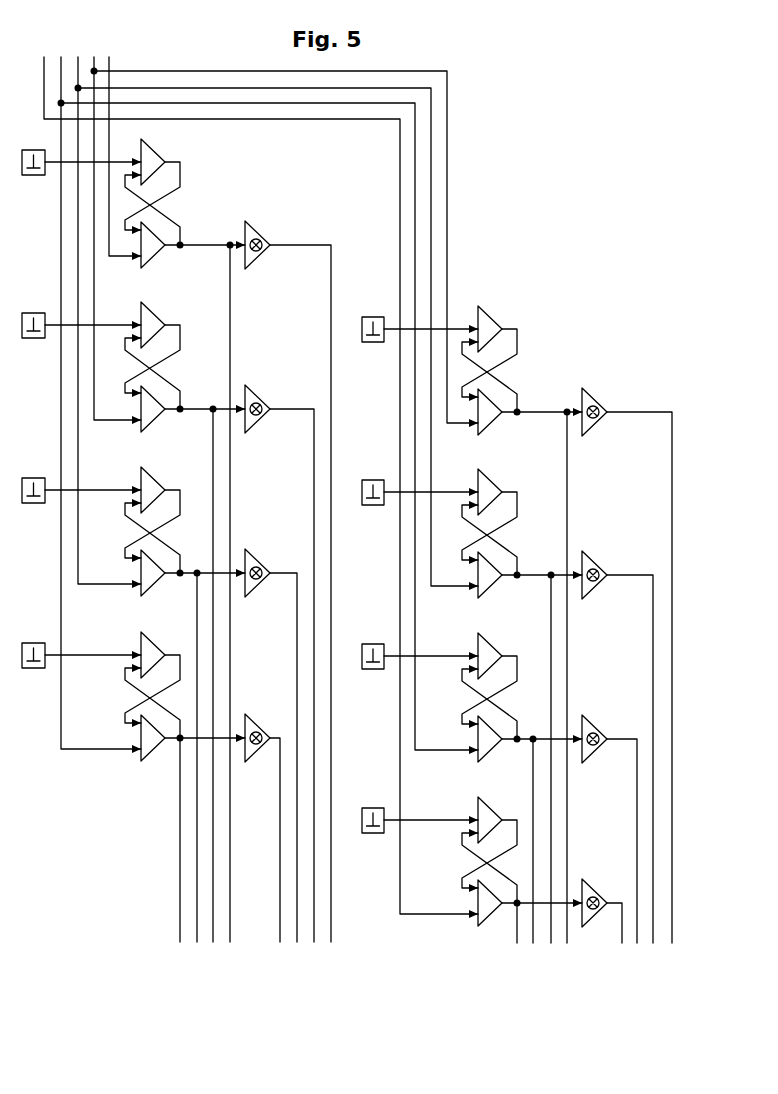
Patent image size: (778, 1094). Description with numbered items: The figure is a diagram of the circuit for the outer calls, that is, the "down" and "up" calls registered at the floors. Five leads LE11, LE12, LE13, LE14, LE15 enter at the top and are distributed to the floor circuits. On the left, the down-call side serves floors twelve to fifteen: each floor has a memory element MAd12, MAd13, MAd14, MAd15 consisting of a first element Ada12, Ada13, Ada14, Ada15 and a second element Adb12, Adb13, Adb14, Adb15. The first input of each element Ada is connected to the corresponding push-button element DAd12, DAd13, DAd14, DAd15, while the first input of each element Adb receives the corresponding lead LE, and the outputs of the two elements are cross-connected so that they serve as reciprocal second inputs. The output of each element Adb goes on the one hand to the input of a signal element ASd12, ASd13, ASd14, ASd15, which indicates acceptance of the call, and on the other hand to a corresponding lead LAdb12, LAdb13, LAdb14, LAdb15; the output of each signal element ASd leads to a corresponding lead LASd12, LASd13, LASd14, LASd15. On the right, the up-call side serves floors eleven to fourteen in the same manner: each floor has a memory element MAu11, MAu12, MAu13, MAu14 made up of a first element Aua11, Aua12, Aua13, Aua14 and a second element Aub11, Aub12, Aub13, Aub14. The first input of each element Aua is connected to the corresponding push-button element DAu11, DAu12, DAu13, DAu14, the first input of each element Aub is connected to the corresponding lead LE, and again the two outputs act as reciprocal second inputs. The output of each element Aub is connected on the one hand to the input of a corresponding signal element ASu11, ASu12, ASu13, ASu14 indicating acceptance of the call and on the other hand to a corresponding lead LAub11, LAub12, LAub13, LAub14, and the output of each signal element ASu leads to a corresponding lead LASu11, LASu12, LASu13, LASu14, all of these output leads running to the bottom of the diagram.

The lead LE11 is at (254, 459).
The lead LE12 is at (262, 377).
The lead LE13 is at (271, 295).
The lead LE14 is at (279, 213).
The lead LE15 is at (118, 130).
The push-button element DAd12 is at (44, 668).
The push-button element DAd13 is at (44, 503).
The push-button element DAd14 is at (44, 338).
The push-button element DAd15 is at (44, 175).
The push-button element DAu11 is at (383, 833).
The push-button element DAu12 is at (383, 669).
The push-button element DAu13 is at (383, 505).
The push-button element DAu14 is at (383, 342).
The element Ada12 is at (142, 642).
The element Ada13 is at (170, 474).
The element Ada14 is at (163, 323).
The element Ada15 is at (173, 148).
The element Adb12 is at (143, 755).
The element Adb13 is at (152, 591).
The element Adb14 is at (163, 420).
The element Adb15 is at (152, 258).
The memory element MAd12 is at (143, 696).
The memory element MAd13 is at (143, 531).
The memory element MAd14 is at (143, 367).
The memory element MAd15 is at (180, 203).
The signal element ASd12 is at (270, 710).
The signal element ASd13 is at (275, 560).
The signal element ASd14 is at (263, 405).
The signal element ASd15 is at (267, 243).
The element Aua11 is at (478, 803).
The element Aua12 is at (478, 640).
The element Aua13 is at (508, 483).
The element Aua14 is at (503, 323).
The element Aub11 is at (478, 922).
The element Aub12 is at (488, 757).
The element Aub13 is at (502, 590).
The element Aub14 is at (503, 423).
The memory element MAu11 is at (480, 861).
The memory element MAu12 is at (480, 699).
The memory element MAu13 is at (480, 533).
The memory element MAu14 is at (516, 370).
The signal element ASu11 is at (613, 878).
The signal element ASu12 is at (598, 733).
The signal element ASu13 is at (617, 560).
The signal element ASu14 is at (600, 410).
The lead LAdb12 is at (205, 885).
The lead LAdb13 is at (211, 803).
The lead LAdb14 is at (211, 721).
The lead LAdb15 is at (211, 639).
The lead LASd12 is at (276, 886).
The lead LASd13 is at (286, 804).
The lead LASd14 is at (295, 722).
The lead LASd15 is at (303, 640).
The lead LAub11 is at (542, 969).
The lead LAub12 is at (548, 887).
The lead LAub13 is at (548, 805).
The lead LAub14 is at (548, 724).
The lead LASu11 is at (617, 970).
The lead LASu12 is at (625, 888).
The lead LASu13 is at (633, 806).
The lead LASu14 is at (642, 725).